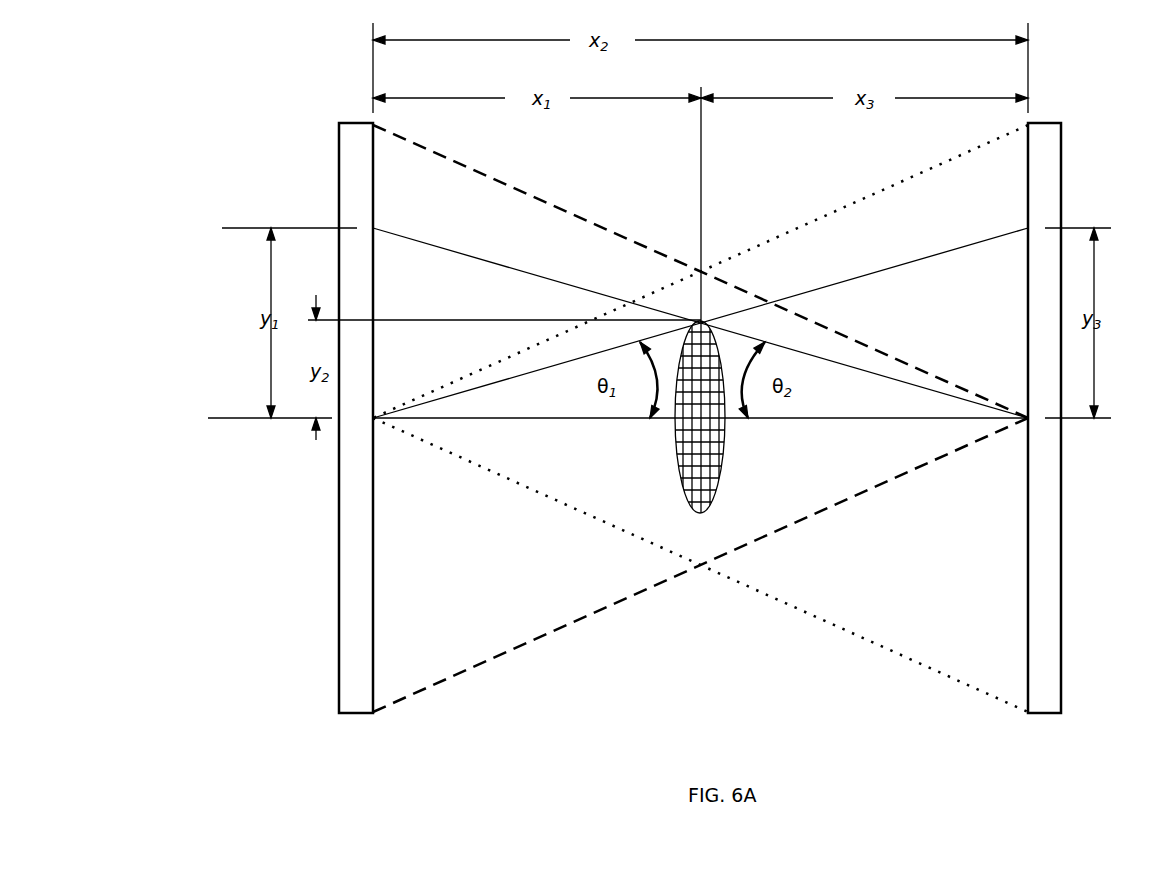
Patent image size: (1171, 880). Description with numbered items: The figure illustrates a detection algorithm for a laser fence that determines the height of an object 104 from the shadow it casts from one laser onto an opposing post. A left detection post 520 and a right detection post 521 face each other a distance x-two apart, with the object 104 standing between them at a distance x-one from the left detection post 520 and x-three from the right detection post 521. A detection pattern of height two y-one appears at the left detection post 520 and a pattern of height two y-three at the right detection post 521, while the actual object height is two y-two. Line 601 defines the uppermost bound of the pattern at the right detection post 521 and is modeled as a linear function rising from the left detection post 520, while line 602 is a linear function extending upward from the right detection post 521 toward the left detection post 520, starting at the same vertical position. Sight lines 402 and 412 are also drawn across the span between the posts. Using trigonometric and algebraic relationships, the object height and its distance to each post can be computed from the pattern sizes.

The left detection post 520 is at (357, 122).
The right detection post 521 is at (1043, 122).
The field of view of first camera 402 is at (570, 253).
The field of view of second camera 412 is at (827, 262).
The line 601 is at (935, 250).
The line 602 is at (480, 257).
The object 104 is at (723, 447).